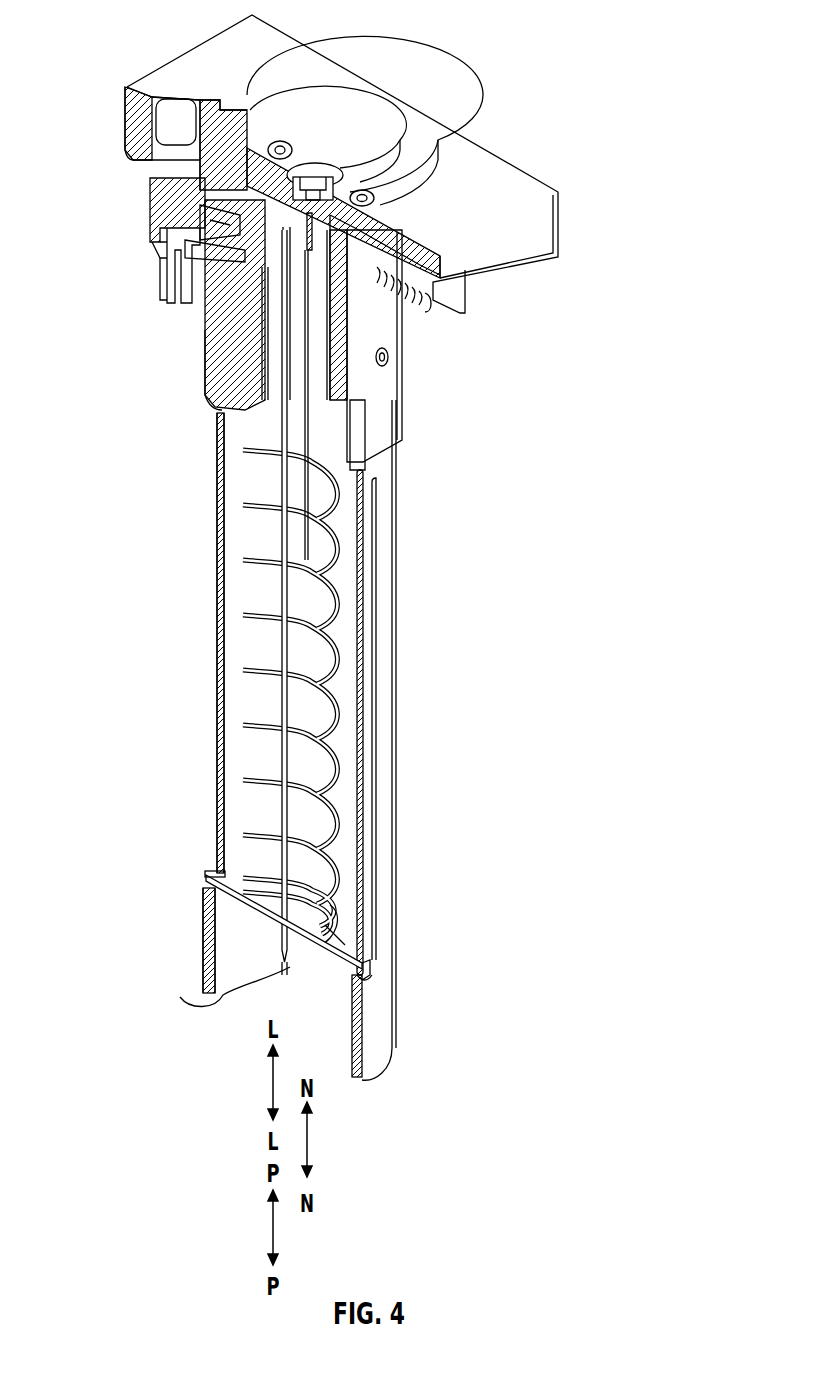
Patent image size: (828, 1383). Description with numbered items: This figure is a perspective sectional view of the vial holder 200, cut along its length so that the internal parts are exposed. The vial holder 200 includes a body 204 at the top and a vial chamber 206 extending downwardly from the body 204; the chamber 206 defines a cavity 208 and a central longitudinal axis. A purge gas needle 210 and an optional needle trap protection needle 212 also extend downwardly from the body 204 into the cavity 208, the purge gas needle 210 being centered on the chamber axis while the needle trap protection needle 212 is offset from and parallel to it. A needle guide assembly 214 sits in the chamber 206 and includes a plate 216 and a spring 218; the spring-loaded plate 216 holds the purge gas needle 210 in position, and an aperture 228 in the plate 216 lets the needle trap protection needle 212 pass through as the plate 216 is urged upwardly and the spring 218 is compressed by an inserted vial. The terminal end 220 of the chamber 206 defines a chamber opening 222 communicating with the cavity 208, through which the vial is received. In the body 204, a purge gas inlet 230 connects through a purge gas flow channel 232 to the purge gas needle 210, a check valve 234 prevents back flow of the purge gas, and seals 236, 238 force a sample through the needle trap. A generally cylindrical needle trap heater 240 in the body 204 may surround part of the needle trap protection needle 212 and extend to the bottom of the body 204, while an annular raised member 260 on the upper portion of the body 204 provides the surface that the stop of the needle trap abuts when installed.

The vial holder 200 is at (411, 232).
The body 204 is at (405, 232).
The vial chamber 206 is at (405, 761).
The cavity 208 is at (232, 655).
The purge gas needle 210 is at (265, 748).
The needle trap protection needle 212 is at (318, 546).
The needle guide assembly 214 is at (232, 853).
The plate 216 is at (345, 943).
The spring 218 is at (340, 837).
The terminal end 220 is at (188, 1000).
The chamber opening 222 is at (270, 998).
The aperture 228 is at (312, 962).
The purge gas inlet 230 is at (150, 310).
The purge gas flow channel 232 is at (232, 343).
The check valve 234 is at (190, 244).
The seal 236 is at (320, 368).
The seal 238 is at (250, 211).
The needle trap heater 240 is at (362, 462).
The annular raised member 260 is at (357, 97).